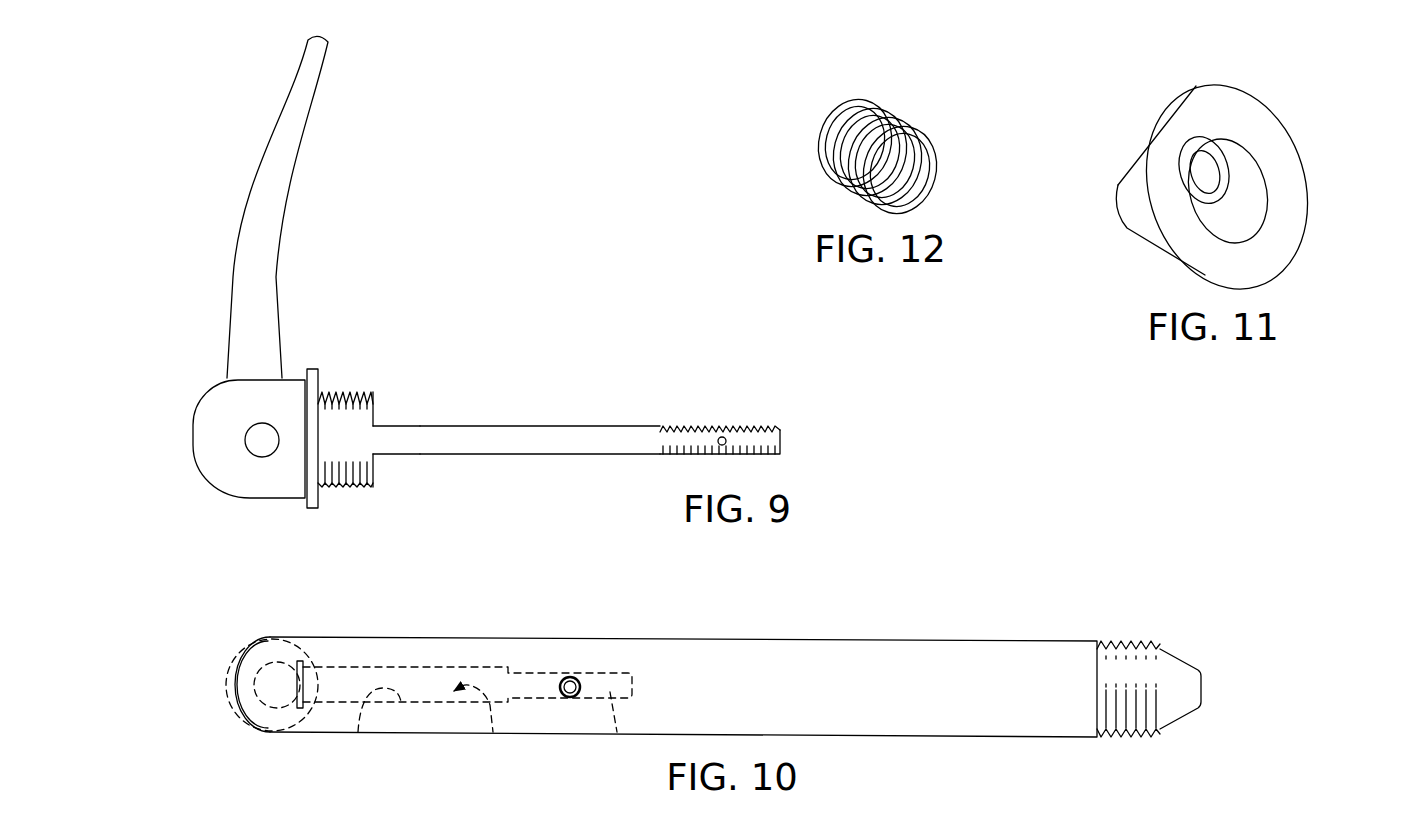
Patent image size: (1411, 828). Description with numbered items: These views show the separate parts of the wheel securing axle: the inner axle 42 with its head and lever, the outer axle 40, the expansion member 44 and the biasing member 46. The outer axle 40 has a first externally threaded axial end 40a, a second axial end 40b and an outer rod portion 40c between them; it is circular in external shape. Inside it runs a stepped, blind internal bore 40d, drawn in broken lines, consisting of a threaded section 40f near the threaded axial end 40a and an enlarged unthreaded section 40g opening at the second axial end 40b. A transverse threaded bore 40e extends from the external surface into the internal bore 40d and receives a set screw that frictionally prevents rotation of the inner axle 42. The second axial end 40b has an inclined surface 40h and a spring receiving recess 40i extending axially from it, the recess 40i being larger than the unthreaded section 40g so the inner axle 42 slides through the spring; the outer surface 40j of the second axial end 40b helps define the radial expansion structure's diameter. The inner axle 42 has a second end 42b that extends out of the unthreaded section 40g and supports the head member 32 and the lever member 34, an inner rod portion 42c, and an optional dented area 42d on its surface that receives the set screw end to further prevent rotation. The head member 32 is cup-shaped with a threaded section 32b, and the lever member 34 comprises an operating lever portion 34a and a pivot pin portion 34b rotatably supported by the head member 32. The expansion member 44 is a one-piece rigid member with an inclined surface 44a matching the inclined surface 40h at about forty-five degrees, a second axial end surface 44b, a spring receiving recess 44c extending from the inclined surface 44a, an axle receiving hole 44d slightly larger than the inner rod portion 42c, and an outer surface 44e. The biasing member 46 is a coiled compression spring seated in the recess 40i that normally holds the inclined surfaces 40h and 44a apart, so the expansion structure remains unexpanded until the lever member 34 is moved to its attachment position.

In FIG. 9, the head member 32 is at (355, 433).
In FIG. 9, the threaded section 32b is at (349, 478).
In FIG. 9, the lever member 34 is at (289, 284).
In FIG. 9, the operating lever portion 34a is at (265, 200).
In FIG. 9, the pivot pin portion 34b is at (262, 444).
In FIG. 9, the inner axle 42 is at (622, 410).
In FIG. 9, the second end 42b is at (393, 425).
In FIG. 9, the inner rod portion 42c is at (540, 440).
In FIG. 9, the dented area 42d is at (722, 437).
In FIG. 10, the outer axle 40 is at (725, 678).
In FIG. 10, the first externally threaded axial end 40a is at (1170, 678).
In FIG. 10, the second axial end 40b is at (277, 635).
In FIG. 10, the outer rod portion 40c is at (762, 672).
In FIG. 10, the internal bore 40d is at (493, 735).
In FIG. 10, the transverse threaded bore 40e is at (575, 678).
In FIG. 10, the threaded section 40f is at (617, 737).
In FIG. 10, the enlarged unthreaded section 40g is at (358, 735).
In FIG. 10, the inclined surface 40h is at (258, 713).
In FIG. 10, the spring receiving recess 40i is at (247, 680).
In FIG. 10, the outer surface 40j is at (258, 658).
In FIG. 11, the expansion member 44 is at (1221, 185).
In FIG. 11, the inclined surface 44a is at (1285, 217).
In FIG. 11, the second axial end surface 44b is at (1115, 190).
In FIG. 11, the spring receiving recess 44c is at (1237, 193).
In FIG. 11, the axle receiving hole 44d is at (1200, 166).
In FIG. 11, the outer surface 44e is at (1160, 225).
In FIG. 12, the biasing member 46 is at (906, 102).